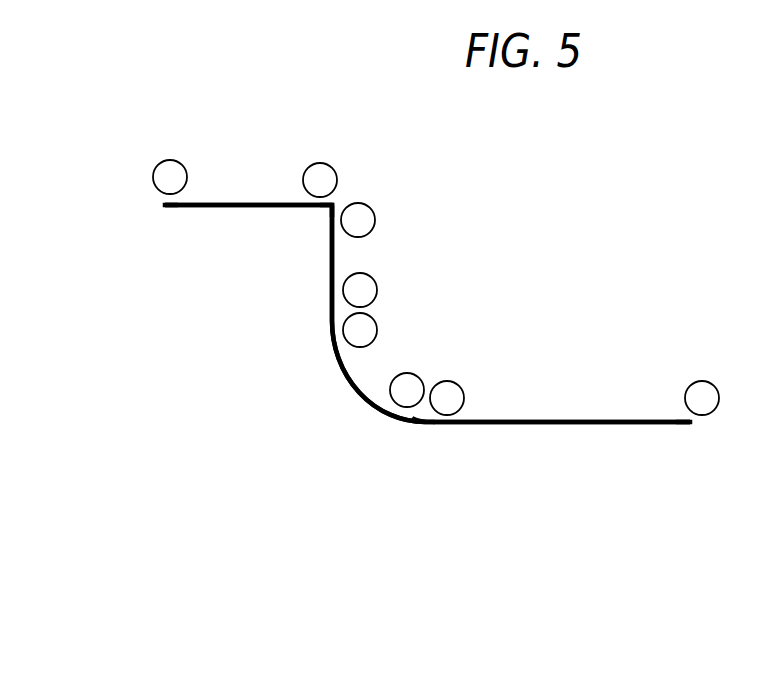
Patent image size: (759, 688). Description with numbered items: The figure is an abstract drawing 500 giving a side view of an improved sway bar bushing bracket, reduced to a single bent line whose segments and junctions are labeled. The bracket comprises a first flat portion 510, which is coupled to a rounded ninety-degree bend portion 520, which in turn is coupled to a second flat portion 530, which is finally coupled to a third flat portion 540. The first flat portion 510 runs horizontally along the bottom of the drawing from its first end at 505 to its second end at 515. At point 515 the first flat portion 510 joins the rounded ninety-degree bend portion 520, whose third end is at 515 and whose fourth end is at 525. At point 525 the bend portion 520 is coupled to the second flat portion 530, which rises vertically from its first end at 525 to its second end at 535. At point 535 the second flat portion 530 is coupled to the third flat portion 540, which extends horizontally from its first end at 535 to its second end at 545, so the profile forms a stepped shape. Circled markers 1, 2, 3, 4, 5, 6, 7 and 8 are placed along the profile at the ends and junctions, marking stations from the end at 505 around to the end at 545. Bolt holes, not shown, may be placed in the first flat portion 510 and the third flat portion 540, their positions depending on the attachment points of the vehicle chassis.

The abstract drawing 500 is at (572, 258).
The first end of first flat portion 505 is at (683, 424).
The first flat portion 510 is at (578, 424).
The point coupling first flat portion to rounded bend portion 515 is at (420, 424).
The rounded 90-degree bend portion 520 is at (362, 398).
The point coupling rounded bend portion to second flat portion 525 is at (332, 321).
The second flat portion 530 is at (332, 258).
The point coupling second flat portion to third flat portion 535 is at (336, 203).
The third flat portion 540 is at (245, 205).
The second end of third flat portion 545 is at (165, 208).
The waypoint 1 is at (702, 398).
The waypoint 2 is at (447, 398).
The waypoint 3 is at (407, 390).
The waypoint 4 is at (360, 330).
The waypoint 5 is at (360, 290).
The waypoint 6 is at (358, 220).
The waypoint 7 is at (320, 180).
The waypoint 8 is at (170, 177).